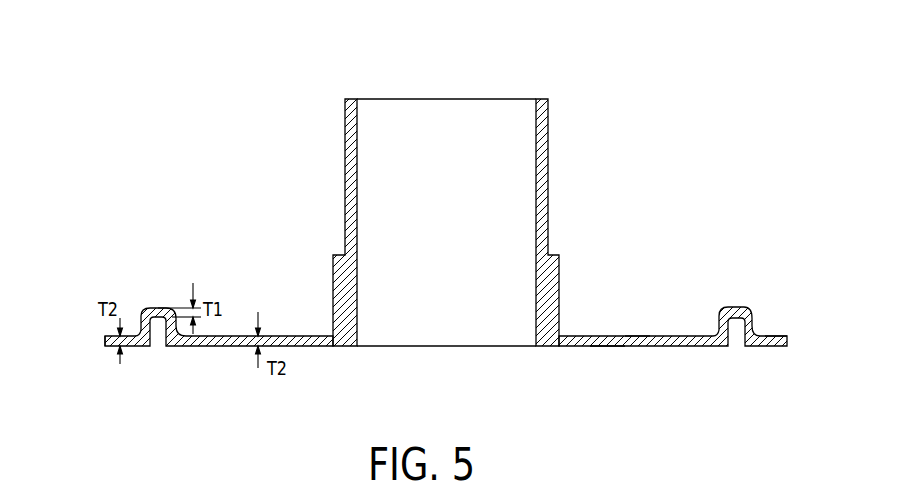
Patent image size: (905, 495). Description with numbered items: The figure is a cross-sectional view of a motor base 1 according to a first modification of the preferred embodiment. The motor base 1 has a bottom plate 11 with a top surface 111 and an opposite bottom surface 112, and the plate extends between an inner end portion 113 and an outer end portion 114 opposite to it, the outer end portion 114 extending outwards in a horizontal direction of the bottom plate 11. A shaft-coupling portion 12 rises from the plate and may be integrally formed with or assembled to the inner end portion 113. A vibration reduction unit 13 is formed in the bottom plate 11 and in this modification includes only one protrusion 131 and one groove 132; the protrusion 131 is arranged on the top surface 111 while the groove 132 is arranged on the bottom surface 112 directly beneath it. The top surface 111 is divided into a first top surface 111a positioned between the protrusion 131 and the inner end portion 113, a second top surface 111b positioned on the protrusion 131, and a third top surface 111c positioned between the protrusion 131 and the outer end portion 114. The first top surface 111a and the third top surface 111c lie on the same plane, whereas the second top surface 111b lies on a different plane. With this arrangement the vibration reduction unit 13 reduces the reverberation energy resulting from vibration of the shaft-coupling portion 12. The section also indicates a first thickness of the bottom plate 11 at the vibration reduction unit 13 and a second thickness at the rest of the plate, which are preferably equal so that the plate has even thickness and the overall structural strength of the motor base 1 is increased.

The motor base 1 is at (558, 82).
The bottom plate 11 is at (678, 346).
The top surface 111 is at (747, 172).
The first top surface 111a is at (637, 336).
The second top surface 111b is at (733, 307).
The third top surface 111c is at (777, 336).
The bottom surface 112 is at (607, 347).
The inner end portion 113 is at (556, 349).
The outer end portion 114 is at (102, 358).
The shaft-coupling portion 12 is at (347, 125).
The vibration reduction unit 13 is at (252, 410).
The protrusion 131 is at (178, 334).
The groove 132 is at (157, 343).